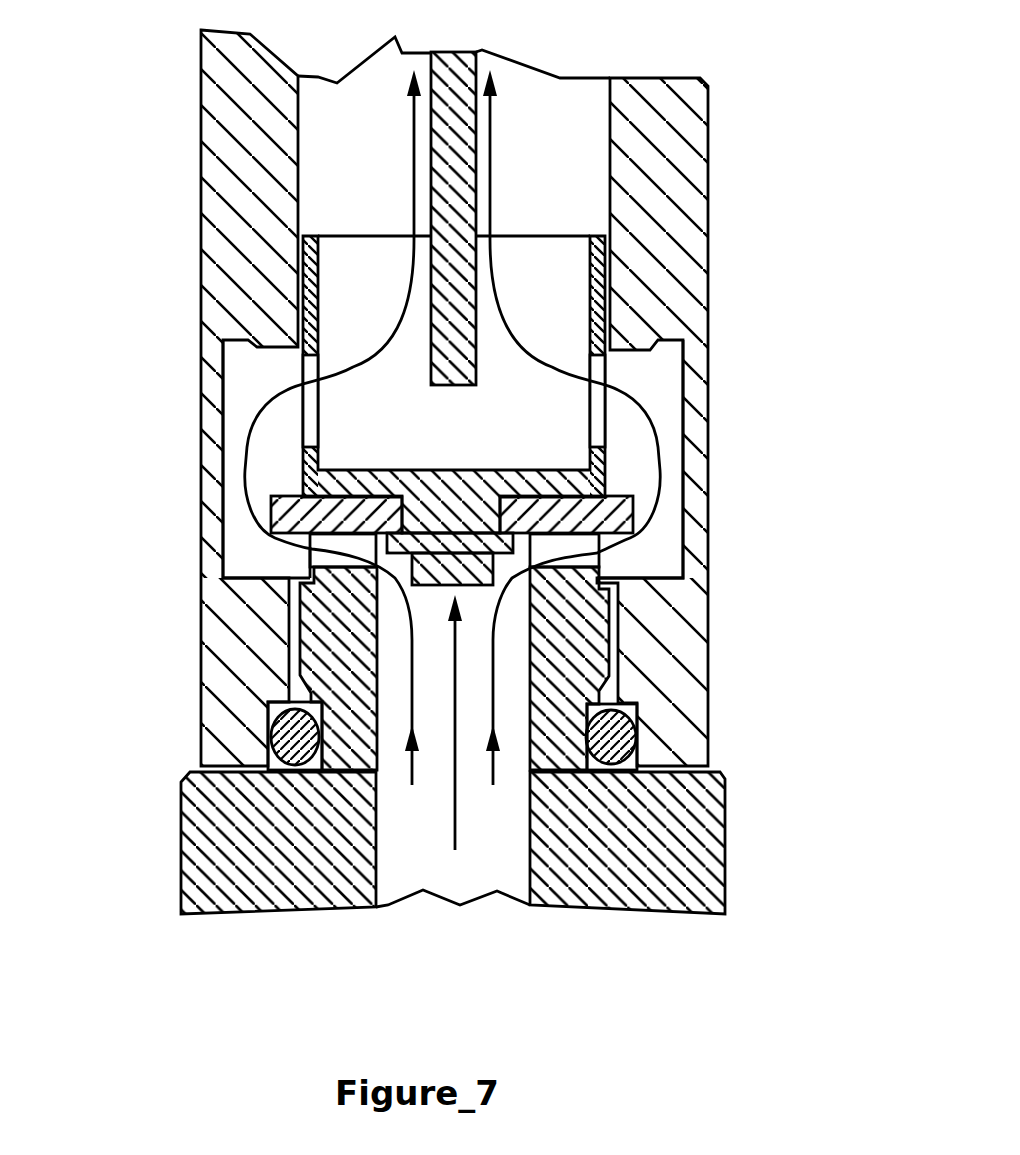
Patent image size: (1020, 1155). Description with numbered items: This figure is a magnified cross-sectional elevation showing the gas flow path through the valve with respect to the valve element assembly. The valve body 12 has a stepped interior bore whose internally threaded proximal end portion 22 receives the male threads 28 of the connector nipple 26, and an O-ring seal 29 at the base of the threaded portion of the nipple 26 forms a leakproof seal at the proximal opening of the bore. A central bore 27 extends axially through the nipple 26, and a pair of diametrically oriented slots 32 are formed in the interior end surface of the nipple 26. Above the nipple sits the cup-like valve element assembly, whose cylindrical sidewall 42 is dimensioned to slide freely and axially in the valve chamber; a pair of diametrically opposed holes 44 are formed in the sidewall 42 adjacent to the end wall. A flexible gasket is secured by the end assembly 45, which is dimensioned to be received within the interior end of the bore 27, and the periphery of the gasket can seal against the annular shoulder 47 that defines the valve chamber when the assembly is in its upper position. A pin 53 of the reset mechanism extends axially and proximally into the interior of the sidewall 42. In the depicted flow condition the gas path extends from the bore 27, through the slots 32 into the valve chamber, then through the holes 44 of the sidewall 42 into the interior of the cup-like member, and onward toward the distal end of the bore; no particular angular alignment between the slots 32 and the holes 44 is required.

The valve body 12 is at (710, 647).
The internally threaded proximal end portion 22 is at (290, 647).
The connector nipple 26 is at (225, 827).
The central bore 27 is at (482, 845).
The male threads 28 is at (605, 607).
The O-ring seal 29 is at (290, 740).
The diametrically oriented slots 32 is at (305, 552).
The cylindrical sidewall 42 is at (313, 267).
The holes 44 is at (308, 372).
The end assembly 45 is at (337, 572).
The annular shoulder 47 is at (633, 350).
The pin 53 is at (478, 193).